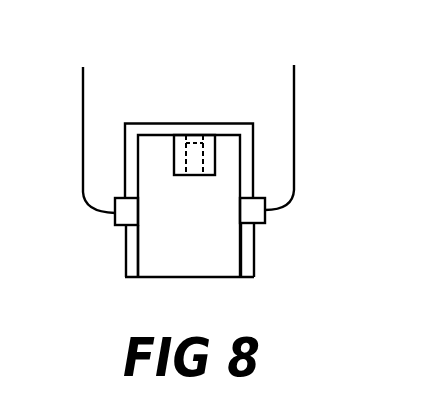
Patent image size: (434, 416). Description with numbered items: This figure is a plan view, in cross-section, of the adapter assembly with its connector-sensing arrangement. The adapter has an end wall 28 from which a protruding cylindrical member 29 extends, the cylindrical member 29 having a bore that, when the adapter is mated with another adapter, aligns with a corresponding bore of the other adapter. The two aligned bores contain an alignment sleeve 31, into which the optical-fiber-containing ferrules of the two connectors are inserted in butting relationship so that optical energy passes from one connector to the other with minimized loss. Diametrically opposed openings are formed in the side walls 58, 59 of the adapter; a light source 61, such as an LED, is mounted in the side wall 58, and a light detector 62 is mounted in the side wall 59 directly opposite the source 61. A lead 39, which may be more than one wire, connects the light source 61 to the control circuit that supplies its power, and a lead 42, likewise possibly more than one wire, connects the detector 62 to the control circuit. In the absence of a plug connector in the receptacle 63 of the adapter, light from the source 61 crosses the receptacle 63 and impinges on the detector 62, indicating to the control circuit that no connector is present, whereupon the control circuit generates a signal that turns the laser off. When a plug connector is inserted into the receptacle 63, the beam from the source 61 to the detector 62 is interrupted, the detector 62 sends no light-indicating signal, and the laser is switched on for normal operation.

The end wall 28 is at (192, 135).
The protruding cylindrical member 29 is at (174, 158).
The alignment sleeve 31 is at (227, 100).
The lead 39 is at (82, 108).
The lead 42 is at (294, 107).
The side wall 58 is at (127, 260).
The side wall 59 is at (254, 255).
The light source 61 is at (115, 219).
The light detector 62 is at (265, 218).
The receptacle 63 is at (158, 260).